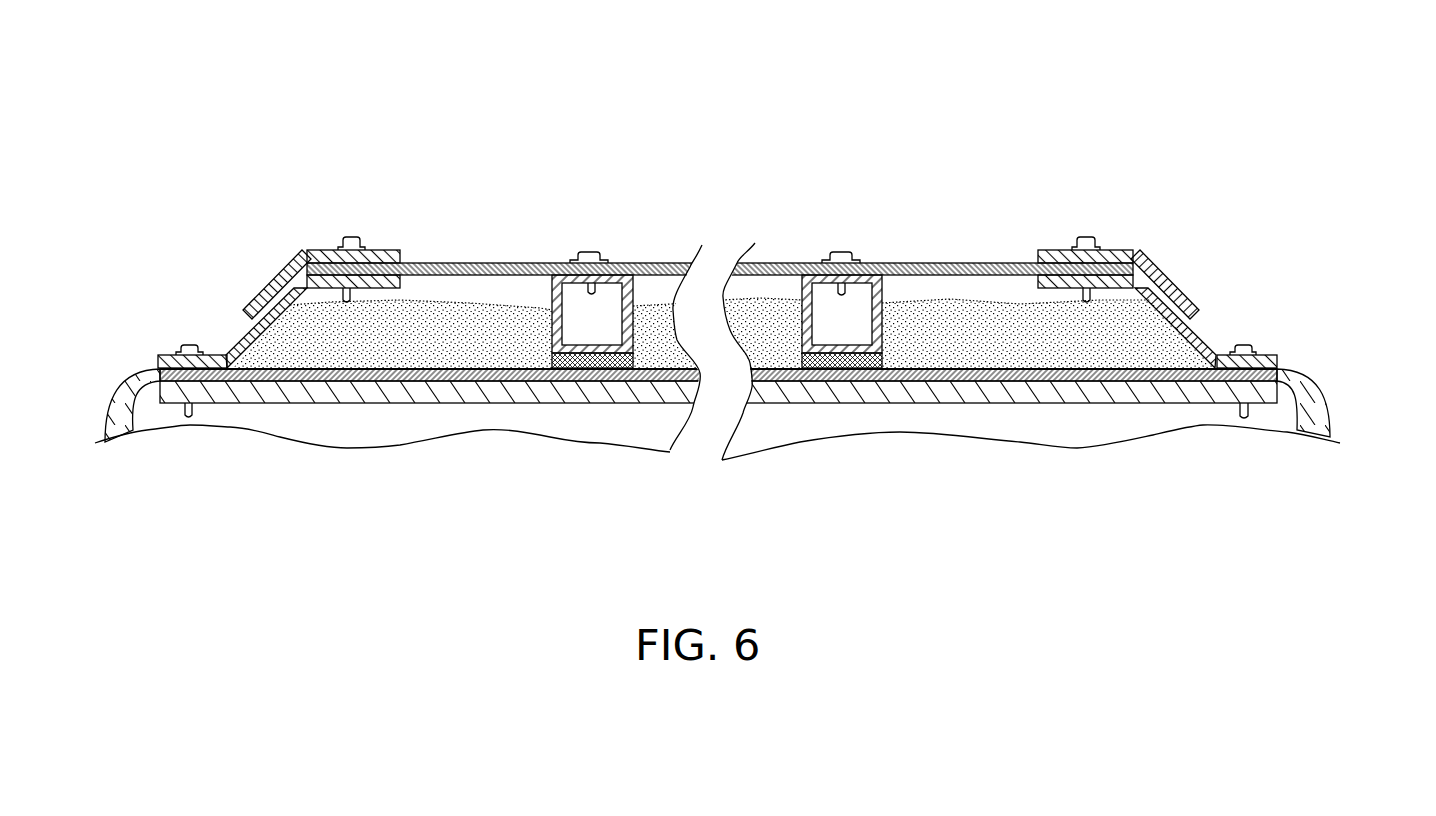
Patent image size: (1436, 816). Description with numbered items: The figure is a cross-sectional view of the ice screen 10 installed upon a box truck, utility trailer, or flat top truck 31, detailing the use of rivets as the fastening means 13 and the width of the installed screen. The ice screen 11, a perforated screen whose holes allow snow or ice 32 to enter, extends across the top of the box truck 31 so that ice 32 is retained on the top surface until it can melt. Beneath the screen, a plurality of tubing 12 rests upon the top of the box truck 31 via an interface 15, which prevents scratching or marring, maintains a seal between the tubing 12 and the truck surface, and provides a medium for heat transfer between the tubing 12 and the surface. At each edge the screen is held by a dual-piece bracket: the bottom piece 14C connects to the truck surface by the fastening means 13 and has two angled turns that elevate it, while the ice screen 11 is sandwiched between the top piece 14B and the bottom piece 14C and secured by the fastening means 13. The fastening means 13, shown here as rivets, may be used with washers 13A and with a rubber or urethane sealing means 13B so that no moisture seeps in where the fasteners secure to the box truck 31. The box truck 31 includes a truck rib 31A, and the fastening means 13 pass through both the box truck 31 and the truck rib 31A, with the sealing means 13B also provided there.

The ice screen 10 is at (172, 248).
The ice screen 11 is at (908, 264).
The tubing 12 is at (636, 278).
The fastening means 13 is at (1082, 238).
The washer 13A is at (1110, 250).
The sealing means 13B is at (1283, 369).
The top piece 14B is at (1147, 250).
The bottom piece 14C is at (1205, 336).
The interface 15 is at (882, 369).
The box truck 31 is at (353, 403).
The truck rib 31A is at (517, 381).
The ice 32 is at (437, 313).